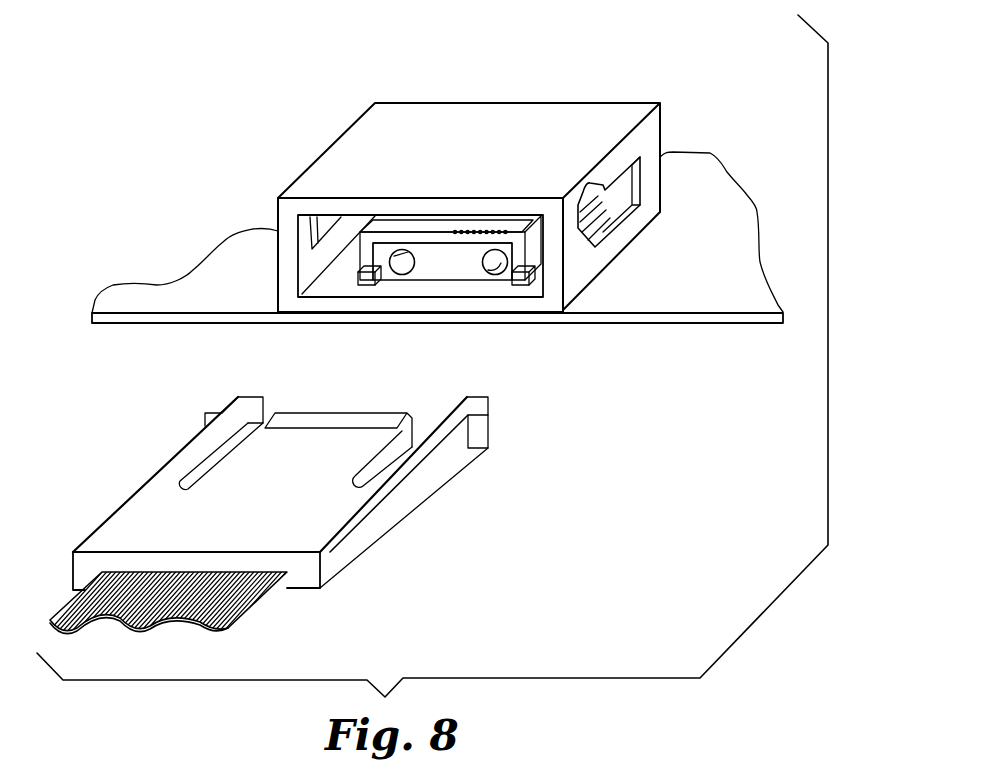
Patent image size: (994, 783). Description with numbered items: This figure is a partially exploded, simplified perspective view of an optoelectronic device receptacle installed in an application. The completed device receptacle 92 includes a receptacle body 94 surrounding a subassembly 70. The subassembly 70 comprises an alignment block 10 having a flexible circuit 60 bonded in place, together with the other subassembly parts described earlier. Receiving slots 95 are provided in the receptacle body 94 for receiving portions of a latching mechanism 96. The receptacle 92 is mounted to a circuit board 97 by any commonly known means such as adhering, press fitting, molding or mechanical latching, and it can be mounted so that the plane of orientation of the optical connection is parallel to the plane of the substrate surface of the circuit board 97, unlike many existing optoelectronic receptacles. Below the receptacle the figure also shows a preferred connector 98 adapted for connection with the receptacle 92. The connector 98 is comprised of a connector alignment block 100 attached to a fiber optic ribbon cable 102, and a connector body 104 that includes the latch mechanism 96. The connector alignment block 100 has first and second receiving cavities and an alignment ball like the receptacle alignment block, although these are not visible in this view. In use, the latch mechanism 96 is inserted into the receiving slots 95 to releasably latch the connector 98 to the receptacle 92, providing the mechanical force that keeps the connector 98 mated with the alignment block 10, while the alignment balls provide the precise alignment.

The device receptacle 92 is at (578, 56).
The receptacle body 94 is at (425, 112).
The receiving slots 95 is at (322, 226).
The alignment block 10 is at (401, 208).
The flexible circuit 60 is at (603, 215).
The circuit board 97 is at (743, 242).
The subassembly 70 is at (433, 280).
The latch mechanism 96 is at (204, 418).
The connector alignment block 100 is at (320, 412).
The connector body 104 is at (143, 496).
The connector 98 is at (455, 510).
The fiber optic ribbon cable 102 is at (250, 612).